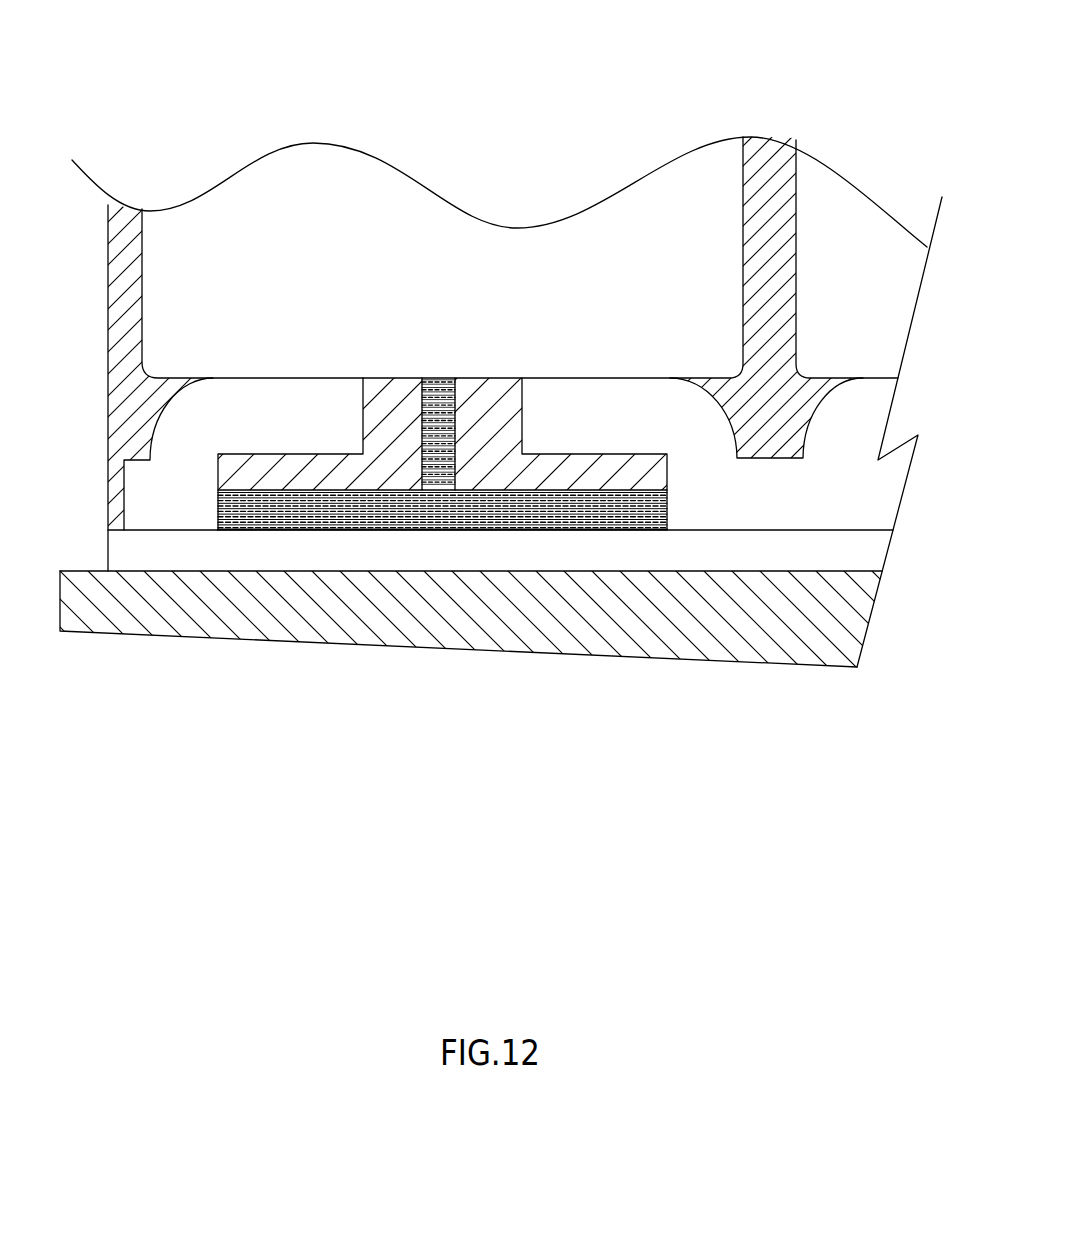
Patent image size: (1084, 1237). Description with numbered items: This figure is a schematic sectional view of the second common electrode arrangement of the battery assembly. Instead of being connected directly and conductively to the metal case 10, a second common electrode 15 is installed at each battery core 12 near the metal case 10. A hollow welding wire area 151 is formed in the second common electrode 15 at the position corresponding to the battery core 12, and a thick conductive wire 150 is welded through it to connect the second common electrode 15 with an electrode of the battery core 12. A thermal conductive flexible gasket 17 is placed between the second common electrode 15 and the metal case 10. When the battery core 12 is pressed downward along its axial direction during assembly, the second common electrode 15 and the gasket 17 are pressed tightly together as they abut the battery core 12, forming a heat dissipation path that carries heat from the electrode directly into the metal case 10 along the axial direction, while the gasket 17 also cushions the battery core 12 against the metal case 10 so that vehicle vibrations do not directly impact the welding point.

The metal case 10 is at (505, 615).
The battery core 12 is at (498, 258).
The second common electrode 15 is at (173, 507).
The thick conductive wire 150 is at (392, 513).
The hollow welding wire area 151 is at (392, 417).
The thermal conductive flexible gasket 17 is at (617, 553).